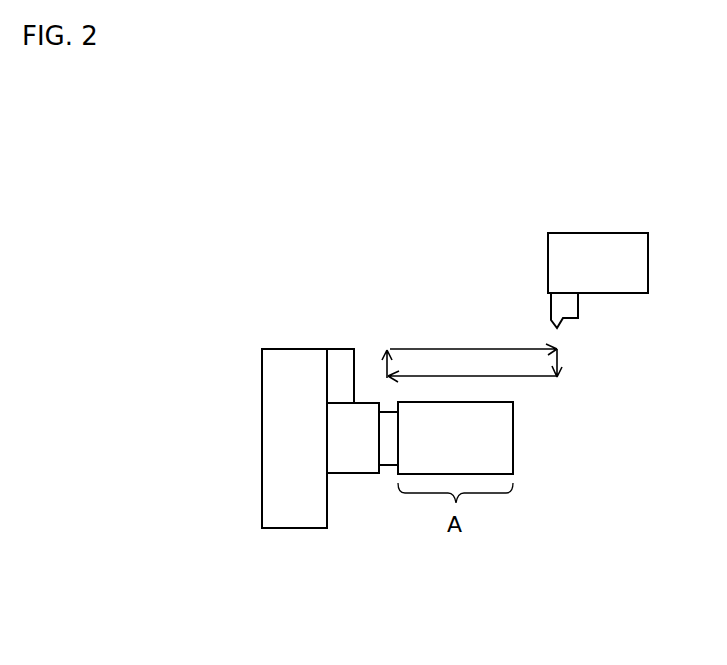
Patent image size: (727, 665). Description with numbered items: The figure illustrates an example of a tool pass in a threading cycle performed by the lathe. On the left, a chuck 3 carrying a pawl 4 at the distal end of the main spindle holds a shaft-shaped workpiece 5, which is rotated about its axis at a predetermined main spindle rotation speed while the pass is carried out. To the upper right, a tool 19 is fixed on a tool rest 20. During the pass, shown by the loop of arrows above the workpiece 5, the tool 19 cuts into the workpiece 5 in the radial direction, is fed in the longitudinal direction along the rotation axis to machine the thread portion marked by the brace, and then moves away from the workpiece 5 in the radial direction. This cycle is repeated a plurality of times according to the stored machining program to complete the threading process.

The chuck 3 is at (293, 358).
The pawl 4 is at (339, 364).
The workpiece 5 is at (507, 428).
The tool 19 is at (558, 307).
The tool rest 20 is at (620, 246).